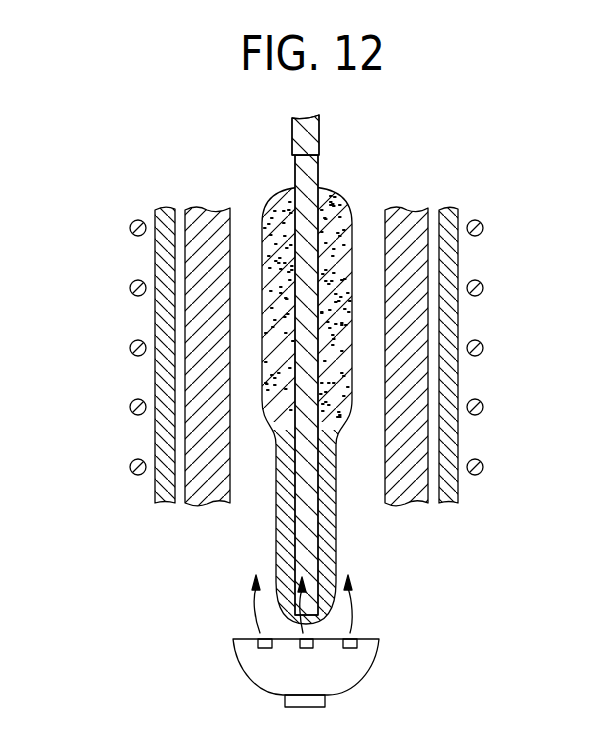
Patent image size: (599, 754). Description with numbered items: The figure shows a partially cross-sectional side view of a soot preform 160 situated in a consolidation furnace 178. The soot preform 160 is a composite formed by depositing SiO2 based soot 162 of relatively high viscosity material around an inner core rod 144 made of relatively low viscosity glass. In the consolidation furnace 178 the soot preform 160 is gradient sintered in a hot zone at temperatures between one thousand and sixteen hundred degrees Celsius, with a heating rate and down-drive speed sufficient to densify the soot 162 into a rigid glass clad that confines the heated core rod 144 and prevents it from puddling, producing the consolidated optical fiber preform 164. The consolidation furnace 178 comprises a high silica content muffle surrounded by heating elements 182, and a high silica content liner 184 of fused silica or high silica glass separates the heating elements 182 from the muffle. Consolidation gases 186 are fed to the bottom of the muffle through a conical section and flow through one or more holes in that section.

The core rod 144 is at (349, 207).
The soot preform 160 is at (272, 200).
The SiO2 based soot 162 is at (353, 252).
The consolidated optical fiber preform 164 is at (275, 518).
The consolidation furnace 178 is at (492, 570).
The heating elements 182 is at (114, 278).
The high silica content liner 184 is at (200, 208).
The consolidation gases 186 is at (352, 604).